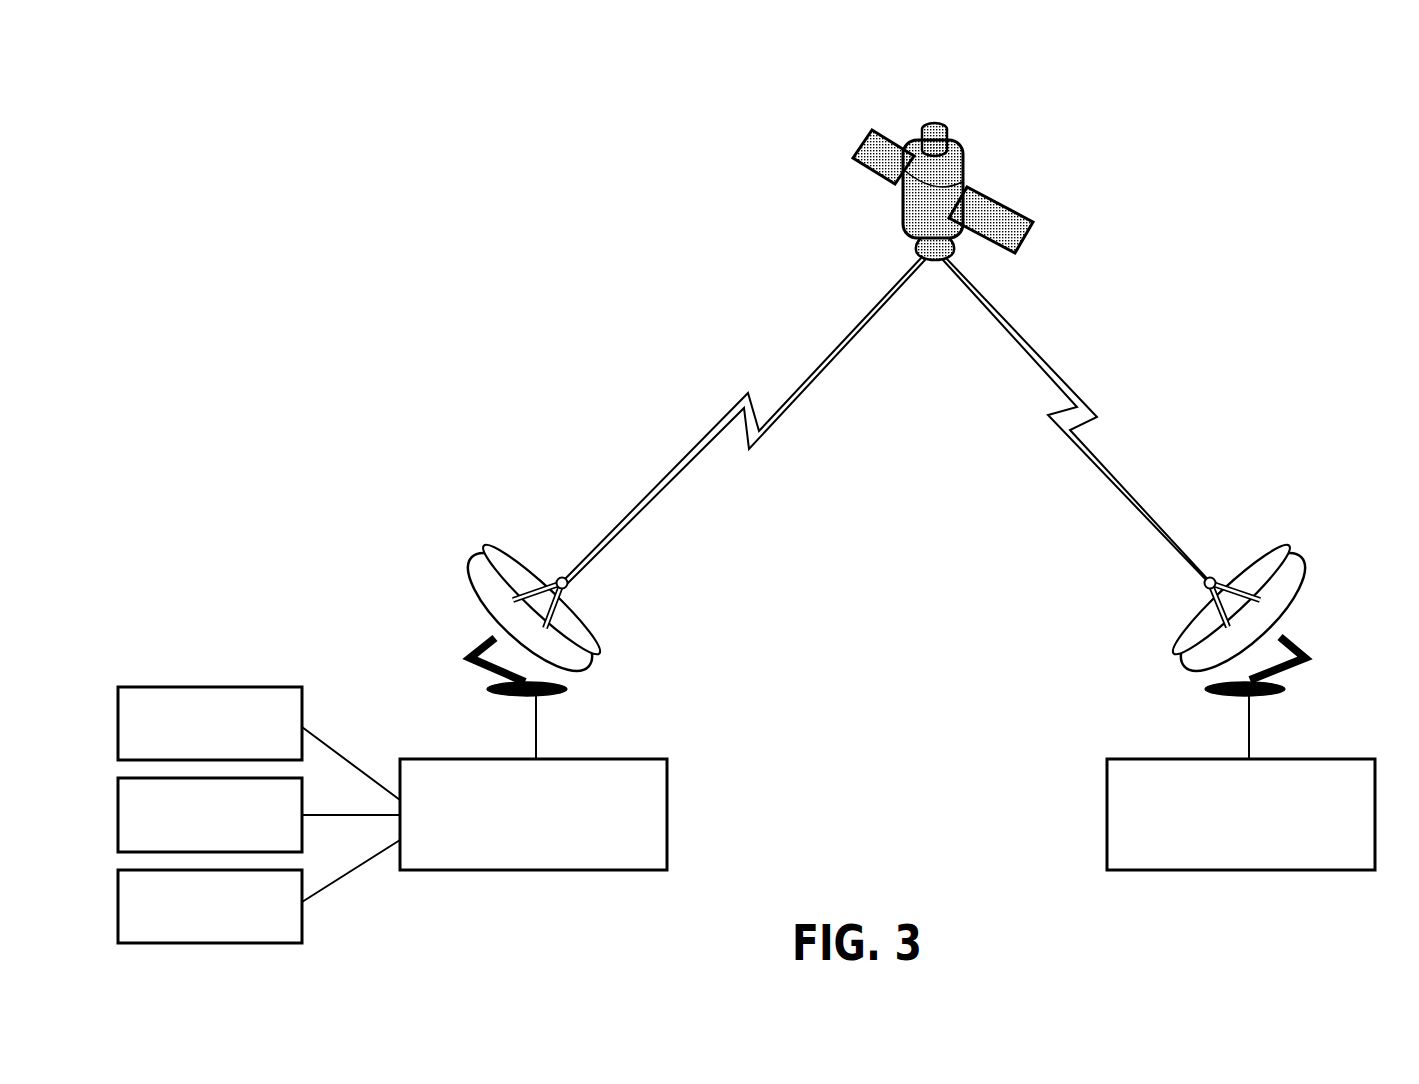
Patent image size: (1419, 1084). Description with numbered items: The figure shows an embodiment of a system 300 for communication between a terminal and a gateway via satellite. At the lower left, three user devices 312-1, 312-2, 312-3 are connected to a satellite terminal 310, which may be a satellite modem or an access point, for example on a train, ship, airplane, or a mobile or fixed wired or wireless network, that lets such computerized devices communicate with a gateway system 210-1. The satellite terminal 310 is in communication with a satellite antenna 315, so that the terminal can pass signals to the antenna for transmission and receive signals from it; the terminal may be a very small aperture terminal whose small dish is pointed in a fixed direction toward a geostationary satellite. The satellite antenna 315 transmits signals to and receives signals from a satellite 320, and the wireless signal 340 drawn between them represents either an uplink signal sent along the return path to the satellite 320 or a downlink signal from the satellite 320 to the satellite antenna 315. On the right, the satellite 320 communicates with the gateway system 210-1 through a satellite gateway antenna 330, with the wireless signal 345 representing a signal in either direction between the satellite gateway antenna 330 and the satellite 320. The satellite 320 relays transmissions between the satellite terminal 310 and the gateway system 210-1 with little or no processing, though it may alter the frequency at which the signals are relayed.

The system 300 is at (272, 92).
The satellite 320 is at (992, 187).
The wireless signal 340 is at (702, 445).
The wireless signal 345 is at (1094, 413).
The satellite antenna 315 is at (521, 569).
The satellite gateway antenna 330 is at (1303, 557).
The satellite terminal 310 is at (636, 759).
The gateway system 210-1 is at (1338, 759).
The user device 312-1 is at (259, 743).
The user device 312-2 is at (259, 815).
The user device 312-3 is at (259, 891).